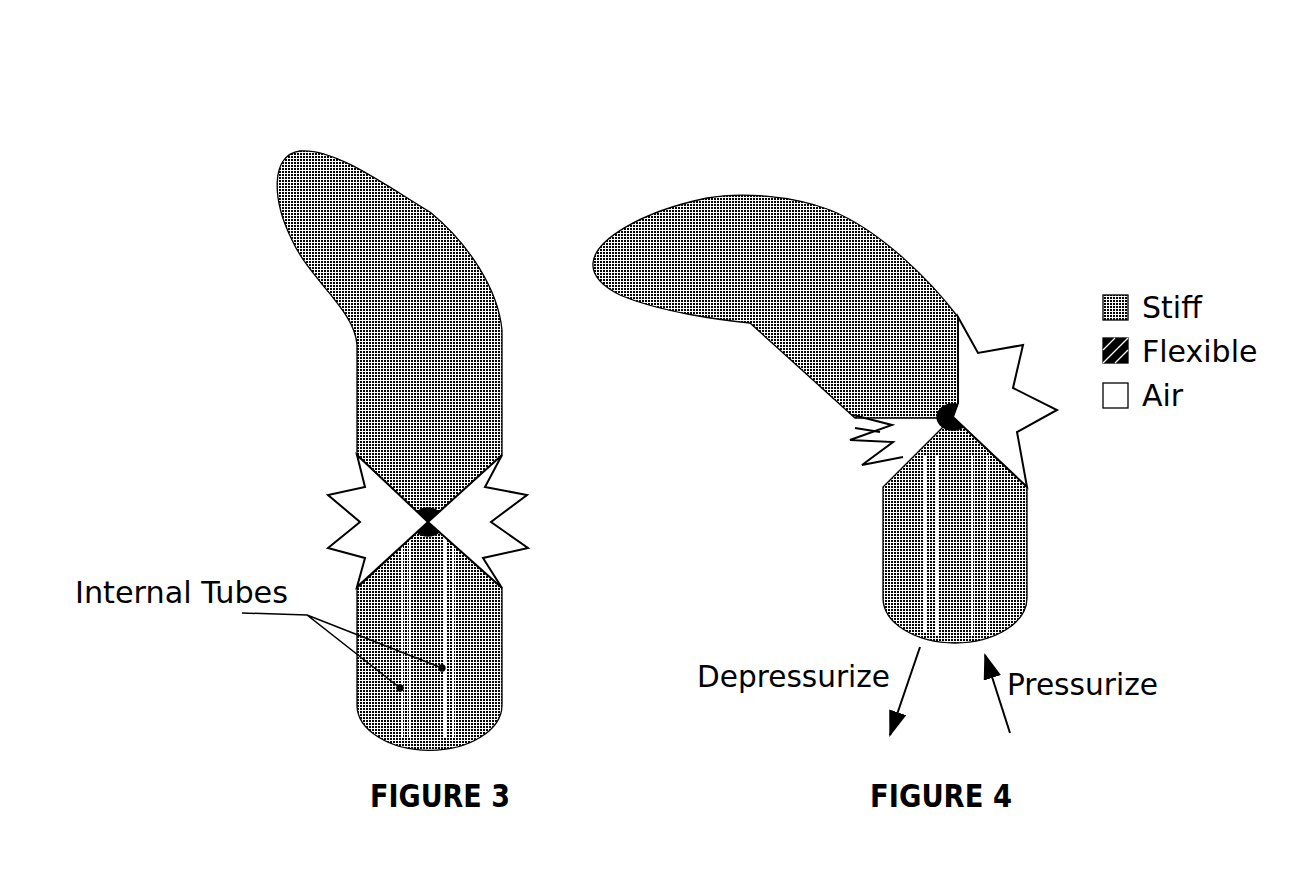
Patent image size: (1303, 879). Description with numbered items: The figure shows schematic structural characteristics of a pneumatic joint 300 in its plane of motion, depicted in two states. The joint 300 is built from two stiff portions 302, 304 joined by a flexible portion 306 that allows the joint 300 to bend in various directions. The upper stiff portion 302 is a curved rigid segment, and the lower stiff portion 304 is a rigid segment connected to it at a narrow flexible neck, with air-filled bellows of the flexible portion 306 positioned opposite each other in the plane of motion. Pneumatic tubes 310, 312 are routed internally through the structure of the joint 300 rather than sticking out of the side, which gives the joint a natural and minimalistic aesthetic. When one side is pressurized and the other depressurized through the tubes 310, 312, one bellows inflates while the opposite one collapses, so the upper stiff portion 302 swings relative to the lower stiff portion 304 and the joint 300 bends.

In FIG. 3, the pneumatic joint 300 is at (243, 128).
In FIG. 4, the pneumatic joint 300 is at (709, 175).
In FIG. 3, the stiff portion 302 is at (427, 208).
In FIG. 4, the stiff portion 302 is at (845, 217).
In FIG. 3, the stiff portion 304 is at (441, 630).
In FIG. 4, the stiff portion 304 is at (963, 523).
In FIG. 3, the flexible portion 306 is at (529, 520).
In FIG. 4, the flexible portion 306 is at (1044, 448).
In FIG. 3, the pneumatic tube 310 is at (403, 712).
In FIG. 4, the pneumatic tube 310 is at (928, 590).
In FIG. 3, the pneumatic tube 312 is at (457, 710).
In FIG. 4, the pneumatic tube 312 is at (975, 598).